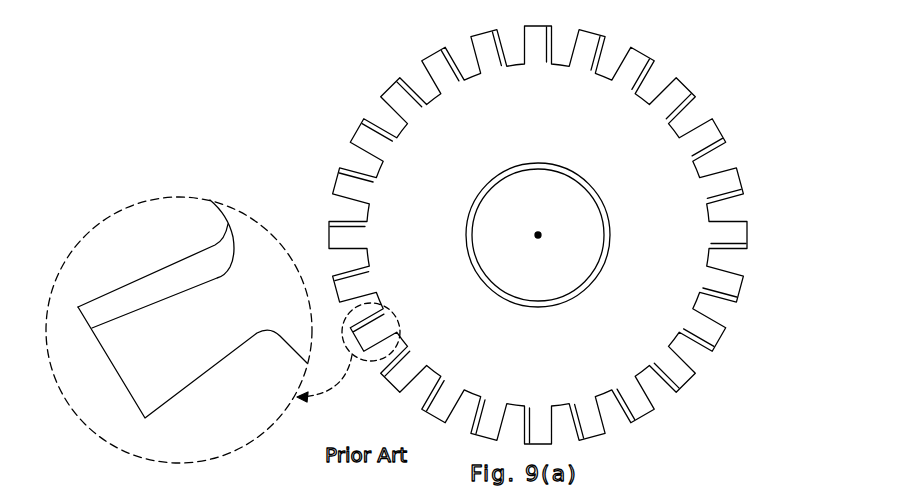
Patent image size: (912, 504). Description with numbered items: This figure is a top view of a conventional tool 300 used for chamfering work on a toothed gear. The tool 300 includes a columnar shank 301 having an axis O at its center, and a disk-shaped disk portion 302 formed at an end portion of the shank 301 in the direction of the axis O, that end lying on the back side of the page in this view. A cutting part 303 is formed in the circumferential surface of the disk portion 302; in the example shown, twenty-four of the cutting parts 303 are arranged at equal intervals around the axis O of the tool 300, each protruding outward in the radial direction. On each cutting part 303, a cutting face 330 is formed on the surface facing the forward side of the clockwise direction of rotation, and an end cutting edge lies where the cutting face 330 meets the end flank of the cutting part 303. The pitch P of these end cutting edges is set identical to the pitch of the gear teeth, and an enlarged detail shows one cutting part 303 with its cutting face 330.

The conventional tool 300 is at (462, 255).
The columnar shank 301 is at (560, 200).
The disk portion 302 is at (671, 187).
The cutting part 303 is at (737, 237).
The cutting face 330 is at (158, 288).
The pitch of the end cutting edges P is at (382, 100).
The axis O is at (543, 235).